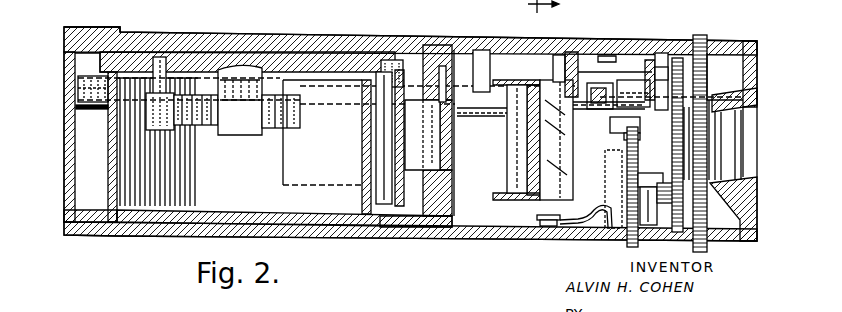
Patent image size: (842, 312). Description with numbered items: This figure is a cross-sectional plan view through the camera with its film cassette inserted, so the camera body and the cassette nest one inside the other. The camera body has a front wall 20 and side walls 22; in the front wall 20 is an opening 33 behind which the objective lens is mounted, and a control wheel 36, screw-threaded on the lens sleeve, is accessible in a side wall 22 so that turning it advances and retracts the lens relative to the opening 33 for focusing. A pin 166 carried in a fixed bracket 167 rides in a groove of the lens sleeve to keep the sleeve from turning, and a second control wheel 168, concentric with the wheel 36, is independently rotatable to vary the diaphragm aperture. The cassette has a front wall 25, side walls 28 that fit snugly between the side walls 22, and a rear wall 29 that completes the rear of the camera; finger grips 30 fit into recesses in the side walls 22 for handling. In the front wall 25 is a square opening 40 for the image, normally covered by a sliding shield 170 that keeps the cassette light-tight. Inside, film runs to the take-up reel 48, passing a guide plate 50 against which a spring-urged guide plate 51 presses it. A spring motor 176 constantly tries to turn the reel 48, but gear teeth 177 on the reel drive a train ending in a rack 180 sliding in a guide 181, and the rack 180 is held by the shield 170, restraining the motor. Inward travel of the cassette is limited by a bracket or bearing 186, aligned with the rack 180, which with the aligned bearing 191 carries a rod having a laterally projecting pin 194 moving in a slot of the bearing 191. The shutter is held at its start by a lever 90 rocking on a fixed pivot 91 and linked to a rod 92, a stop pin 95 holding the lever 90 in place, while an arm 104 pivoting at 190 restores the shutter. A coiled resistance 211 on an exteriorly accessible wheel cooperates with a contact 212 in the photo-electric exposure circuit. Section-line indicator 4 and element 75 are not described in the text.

The front wall 20 is at (757, 213).
The side walls 22 is at (336, 35).
The front wall 25 is at (447, 187).
The side walls 28 is at (368, 50).
The rear wall 29 is at (64, 172).
The finger grips 30 is at (109, 27).
The opening 33 is at (746, 108).
The control wheel 36 is at (703, 35).
The opening 40 is at (444, 172).
The take-up reel 48 is at (362, 200).
The guide plate 50 is at (392, 145).
The guide plate 51 is at (414, 207).
The bracket 75 is at (520, 200).
The lever 90 is at (585, 110).
The fixed pivot 91 is at (561, 60).
The rod 92 is at (598, 86).
The stop pin 95 is at (612, 56).
The arm 104 is at (619, 72).
The pin 166 is at (624, 157).
The fixed bracket 167 is at (640, 180).
The control wheel 168 is at (681, 58).
The sliding shield 170 is at (443, 66).
The spring motor 176 is at (199, 147).
The gear teeth 177 is at (97, 64).
The rack 180 is at (78, 79).
The guide 181 is at (73, 110).
The bracket or bearing 186 is at (476, 116).
The pivot 190 is at (668, 52).
The bearing 191 is at (731, 71).
The laterally projecting pin 194 is at (635, 130).
The resistance 211 is at (596, 234).
The contact 212 is at (572, 236).
The section line 4 is at (532, 7).